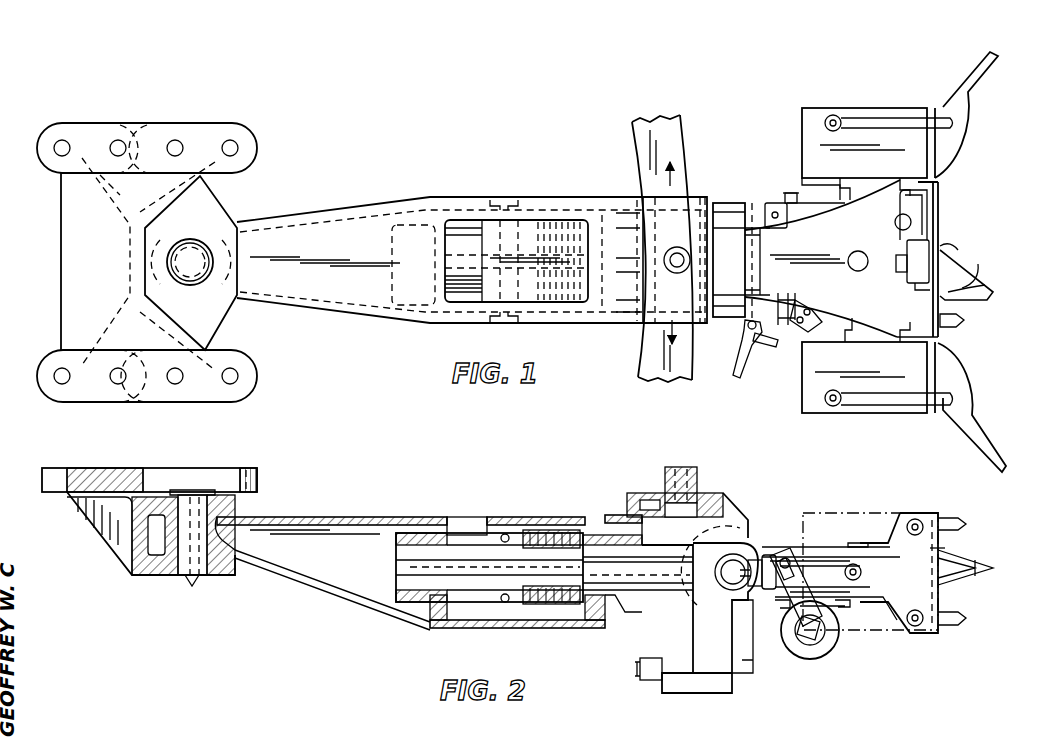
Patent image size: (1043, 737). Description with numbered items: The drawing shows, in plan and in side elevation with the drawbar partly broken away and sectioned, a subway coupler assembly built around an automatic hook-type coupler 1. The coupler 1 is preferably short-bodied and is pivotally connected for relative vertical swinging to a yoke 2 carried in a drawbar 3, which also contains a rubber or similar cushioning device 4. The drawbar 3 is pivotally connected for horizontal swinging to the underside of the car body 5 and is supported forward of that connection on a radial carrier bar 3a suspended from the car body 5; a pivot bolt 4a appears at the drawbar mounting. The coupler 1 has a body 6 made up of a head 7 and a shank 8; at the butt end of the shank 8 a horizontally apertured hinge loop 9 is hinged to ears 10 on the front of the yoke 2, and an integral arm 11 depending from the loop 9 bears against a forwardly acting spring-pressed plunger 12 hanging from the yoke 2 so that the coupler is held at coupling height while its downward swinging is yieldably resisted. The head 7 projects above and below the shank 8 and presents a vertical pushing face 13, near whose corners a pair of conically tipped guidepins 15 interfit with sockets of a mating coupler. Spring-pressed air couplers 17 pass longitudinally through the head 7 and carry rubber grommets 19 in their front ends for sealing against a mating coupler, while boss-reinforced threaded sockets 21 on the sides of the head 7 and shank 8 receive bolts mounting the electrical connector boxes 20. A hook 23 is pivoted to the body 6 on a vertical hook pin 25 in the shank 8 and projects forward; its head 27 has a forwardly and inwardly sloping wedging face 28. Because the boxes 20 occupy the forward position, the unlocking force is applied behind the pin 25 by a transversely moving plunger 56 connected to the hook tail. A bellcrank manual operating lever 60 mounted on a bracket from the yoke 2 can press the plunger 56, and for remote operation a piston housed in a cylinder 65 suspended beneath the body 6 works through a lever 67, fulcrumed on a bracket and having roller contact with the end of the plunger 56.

In FIG. 1, the coupler 1 is at (942, 218).
In FIG. 2, the coupler 1 is at (939, 512).
In FIG. 1, the yoke 2 is at (602, 232).
In FIG. 2, the yoke 2 is at (665, 572).
In FIG. 1, the drawbar 3 is at (333, 235).
In FIG. 2, the drawbar 3 is at (350, 517).
In FIG. 1, the radial carrier bar 3a is at (684, 160).
In FIG. 1, the cushioning device 4 is at (555, 218).
In FIG. 2, the cushioning device 4 is at (553, 530).
In FIG. 2, the pivot bolt 4a is at (213, 575).
In FIG. 2, the car body 5 is at (700, 502).
In FIG. 1, the body 6 is at (832, 260).
In FIG. 2, the body 6 is at (879, 590).
In FIG. 1, the head 7 is at (939, 233).
In FIG. 2, the head 7 is at (945, 550).
In FIG. 1, the shank 8 is at (795, 240).
In FIG. 2, the shank 8 is at (822, 556).
In FIG. 1, the hinge loop 9 is at (748, 222).
In FIG. 2, the hinge loop 9 is at (716, 590).
In FIG. 1, the ears 10 is at (723, 212).
In FIG. 2, the arm 11 is at (755, 655).
In FIG. 2, the spring-pressed plunger 12 is at (738, 680).
In FIG. 1, the front face 13 is at (939, 196).
In FIG. 2, the front face 13 is at (945, 600).
In FIG. 1, the guidepins 15 is at (960, 324).
In FIG. 2, the guidepins 15 is at (962, 521).
In FIG. 1, the air couplers 17 is at (897, 262).
In FIG. 1, the rubber grommets 19 is at (950, 260).
In FIG. 1, the electrical connectors 20 is at (808, 135).
In FIG. 2, the electrical connectors 20 is at (840, 513).
In FIG. 1, the threaded sockets 21 is at (900, 180).
In FIG. 2, the threaded sockets 21 is at (915, 519).
In FIG. 1, the hook 23 is at (975, 272).
In FIG. 2, the hook 23 is at (978, 565).
In FIG. 1, the hook pin 25 is at (858, 252).
In FIG. 2, the hook pin 25 is at (858, 545).
In FIG. 1, the hook head 27 is at (975, 294).
In FIG. 1, the wedging face 28 is at (990, 284).
In FIG. 1, the plunger 56 is at (790, 300).
In FIG. 1, the manual operating lever 60 is at (760, 337).
In FIG. 2, the manual operating lever 60 is at (778, 558).
In FIG. 2, the cylinder 65 is at (840, 640).
In FIG. 1, the lever 67 is at (807, 314).
In FIG. 2, the lever 67 is at (808, 587).